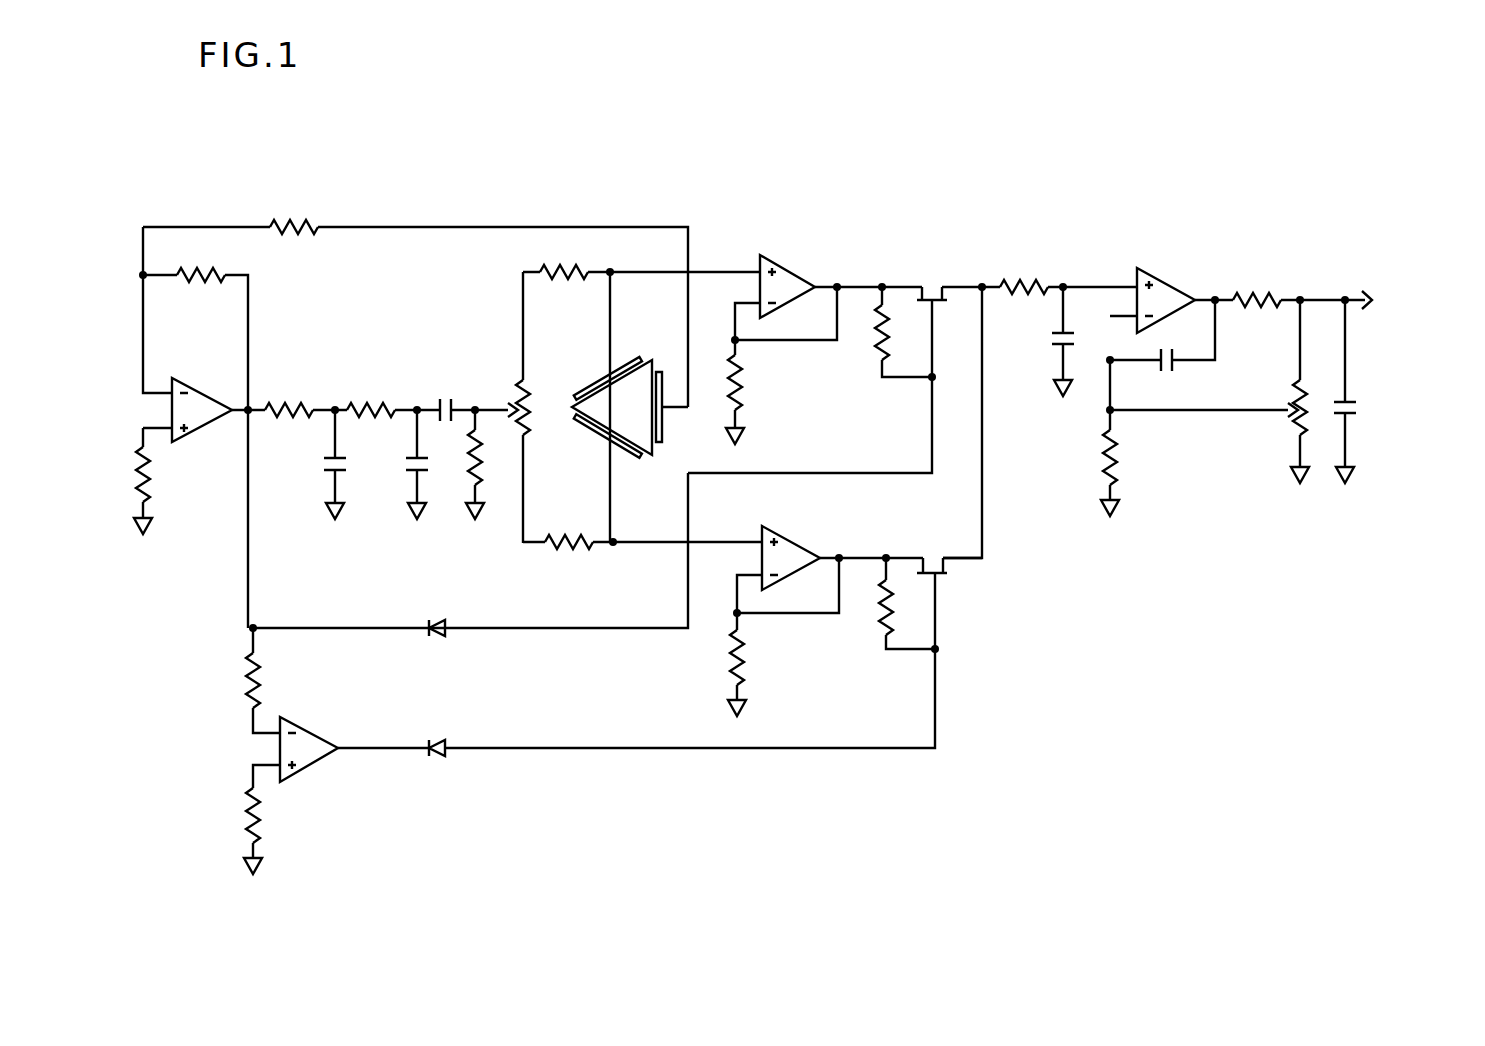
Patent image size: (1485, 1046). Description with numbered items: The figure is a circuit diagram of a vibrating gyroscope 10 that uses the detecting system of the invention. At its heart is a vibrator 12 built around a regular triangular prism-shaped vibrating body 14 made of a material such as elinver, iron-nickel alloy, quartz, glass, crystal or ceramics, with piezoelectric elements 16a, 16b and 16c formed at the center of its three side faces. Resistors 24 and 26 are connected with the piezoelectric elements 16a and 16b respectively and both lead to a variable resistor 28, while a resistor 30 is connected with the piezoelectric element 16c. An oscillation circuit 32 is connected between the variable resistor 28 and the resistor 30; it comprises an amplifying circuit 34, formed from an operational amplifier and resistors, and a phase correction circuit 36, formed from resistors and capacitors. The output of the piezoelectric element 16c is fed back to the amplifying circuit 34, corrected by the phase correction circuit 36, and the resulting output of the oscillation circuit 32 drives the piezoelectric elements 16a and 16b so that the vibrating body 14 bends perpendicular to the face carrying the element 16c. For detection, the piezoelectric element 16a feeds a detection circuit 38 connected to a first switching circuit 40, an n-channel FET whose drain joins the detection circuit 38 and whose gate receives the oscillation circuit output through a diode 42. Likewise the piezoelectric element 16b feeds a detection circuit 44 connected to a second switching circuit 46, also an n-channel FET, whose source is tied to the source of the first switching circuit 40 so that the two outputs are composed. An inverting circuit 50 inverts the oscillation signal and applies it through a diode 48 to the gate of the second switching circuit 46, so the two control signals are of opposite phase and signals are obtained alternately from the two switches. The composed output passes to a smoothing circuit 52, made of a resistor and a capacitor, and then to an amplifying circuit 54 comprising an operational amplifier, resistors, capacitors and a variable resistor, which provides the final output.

The vibrating gyroscope 10 is at (820, 137).
The vibrator 12 is at (632, 401).
The vibrating body 14 is at (645, 440).
The piezoelectric element 16a is at (591, 389).
The piezoelectric element 16b is at (590, 426).
The piezoelectric element 16c is at (661, 422).
The resistor 24 is at (546, 266).
The resistor 26 is at (577, 548).
The variable resistor 28 is at (513, 395).
The resistor 30 is at (316, 233).
The oscillation circuit 32 is at (367, 326).
The amplifying circuit 34 is at (221, 390).
The phase correction circuit 36 is at (369, 394).
The detection circuit 38 is at (804, 267).
The first switching circuit 40 is at (921, 274).
The diode 42 is at (432, 640).
The detection circuit 44 is at (803, 542).
The second switching circuit 46 is at (932, 547).
The diode 48 is at (433, 763).
The inverting circuit 50 is at (312, 770).
The smoothing circuit 52 is at (1051, 274).
The amplifying circuit 54 is at (1196, 284).